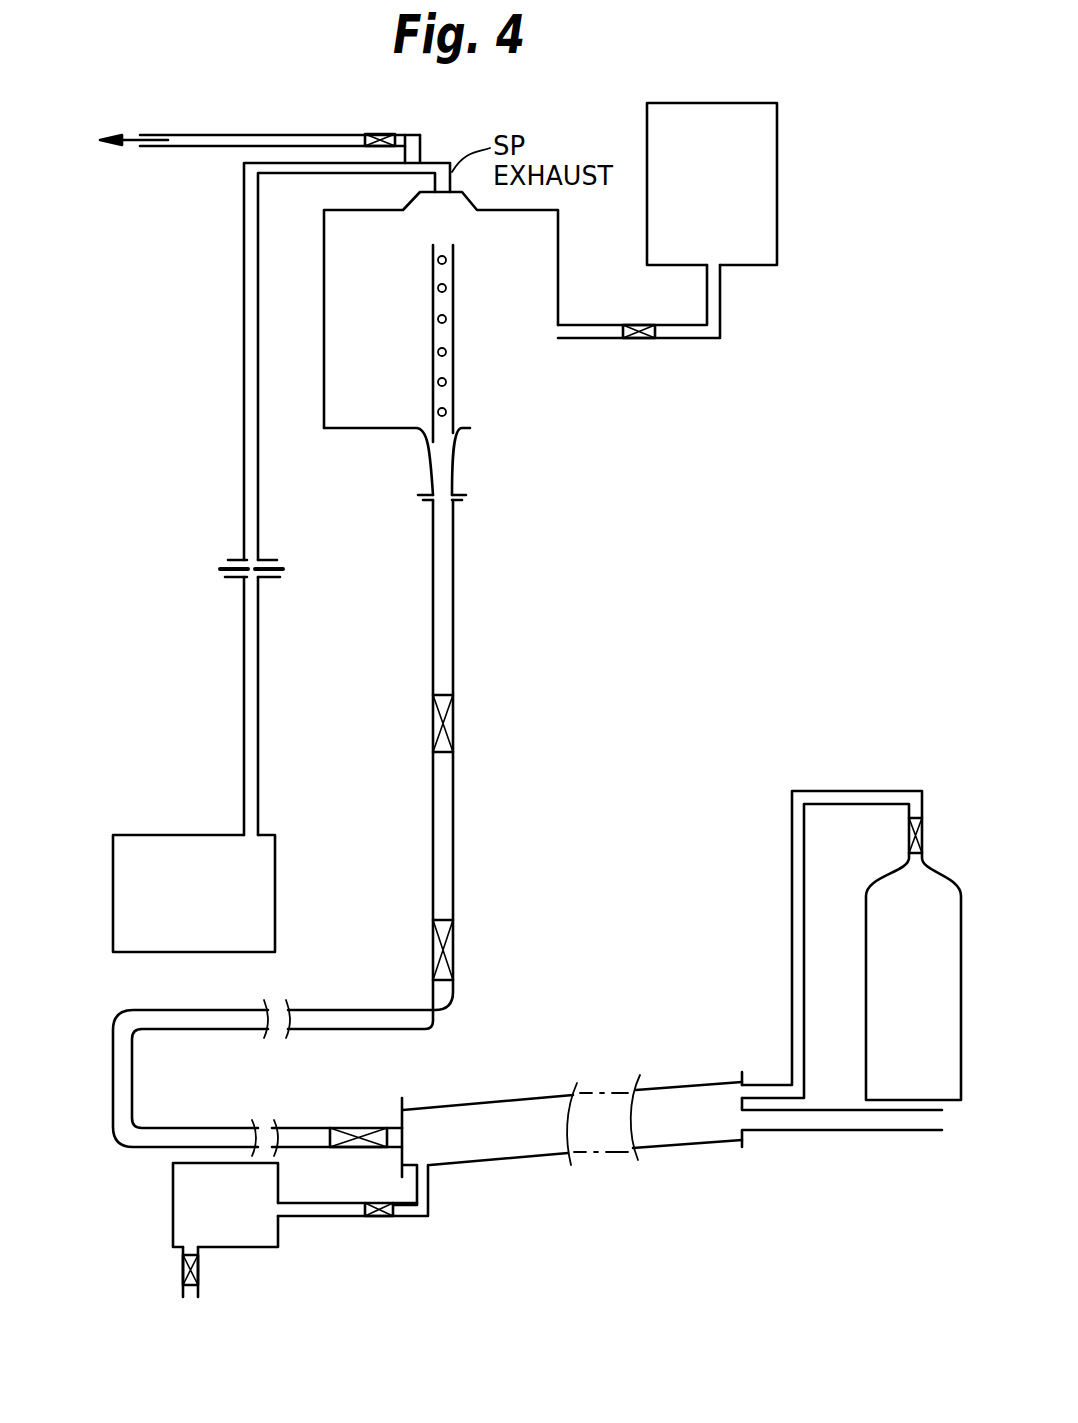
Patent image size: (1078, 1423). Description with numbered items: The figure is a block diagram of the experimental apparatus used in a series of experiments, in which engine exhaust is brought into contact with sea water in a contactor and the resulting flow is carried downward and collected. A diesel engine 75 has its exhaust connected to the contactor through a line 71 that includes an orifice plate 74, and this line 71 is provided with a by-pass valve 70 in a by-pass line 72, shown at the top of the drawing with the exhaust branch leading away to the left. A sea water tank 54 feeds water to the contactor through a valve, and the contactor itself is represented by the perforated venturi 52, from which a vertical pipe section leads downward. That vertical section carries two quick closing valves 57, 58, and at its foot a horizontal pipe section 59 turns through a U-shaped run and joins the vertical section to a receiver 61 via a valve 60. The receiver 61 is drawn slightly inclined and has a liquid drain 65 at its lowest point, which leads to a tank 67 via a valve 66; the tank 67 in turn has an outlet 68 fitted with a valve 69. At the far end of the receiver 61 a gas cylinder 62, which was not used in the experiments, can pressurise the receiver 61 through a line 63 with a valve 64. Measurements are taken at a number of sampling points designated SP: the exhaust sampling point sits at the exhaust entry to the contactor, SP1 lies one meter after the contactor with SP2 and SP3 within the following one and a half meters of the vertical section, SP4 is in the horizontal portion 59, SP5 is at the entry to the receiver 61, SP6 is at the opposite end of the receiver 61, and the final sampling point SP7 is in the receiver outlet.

The venturi 52 is at (455, 466).
The sea water tank 54 is at (778, 200).
The quick closing valve 57 is at (454, 718).
The quick closing valve 58 is at (454, 940).
The horizontal pipe section 59 is at (330, 1010).
The valve 60 is at (352, 1128).
The receiver 61 is at (525, 1098).
The gas cylinder 62 is at (866, 945).
The line 63 is at (792, 985).
The valve 64 is at (922, 835).
The liquid drain 65 is at (430, 1182).
The valve 66 is at (378, 1216).
The tank 67 is at (173, 1198).
The outlet 68 is at (183, 1290).
The valve 69 is at (198, 1267).
The by-pass valve 70 is at (389, 133).
The line 71 is at (244, 252).
The by-pass line 72 is at (418, 133).
The orifice plate 74 is at (233, 557).
The diesel engine 75 is at (178, 835).
The sampling point SP1 is at (454, 650).
The sampling point SP2 is at (454, 803).
The sampling point SP3 is at (454, 905).
The sampling point SP4 is at (132, 1072).
The sampling point SP5 is at (422, 1098).
The sampling point SP6 is at (728, 1082).
The sampling point SP7 is at (792, 1132).